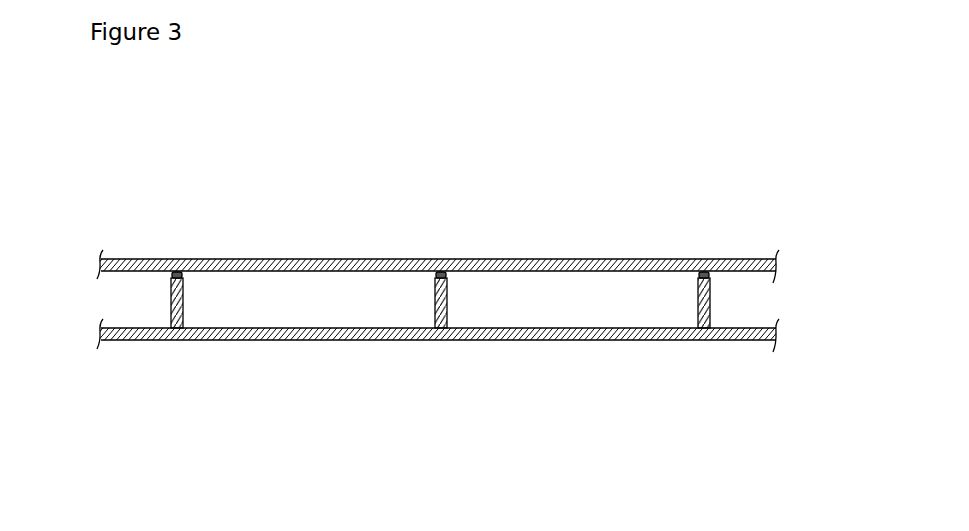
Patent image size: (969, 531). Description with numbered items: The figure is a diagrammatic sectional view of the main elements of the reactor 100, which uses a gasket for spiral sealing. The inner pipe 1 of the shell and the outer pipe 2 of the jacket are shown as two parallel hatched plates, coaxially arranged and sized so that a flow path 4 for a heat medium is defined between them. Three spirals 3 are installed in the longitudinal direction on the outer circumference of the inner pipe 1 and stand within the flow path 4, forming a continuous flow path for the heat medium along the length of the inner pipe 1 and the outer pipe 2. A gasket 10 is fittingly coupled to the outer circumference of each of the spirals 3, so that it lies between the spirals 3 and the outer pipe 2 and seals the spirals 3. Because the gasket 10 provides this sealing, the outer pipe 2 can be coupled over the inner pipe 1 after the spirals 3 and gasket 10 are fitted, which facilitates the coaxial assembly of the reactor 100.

The reactor 100 is at (90, 90).
The inner pipe 1 is at (310, 341).
The outer pipe 2 is at (326, 259).
The spirals 3 is at (171, 297).
The flow path 4 is at (547, 309).
The gasket 10 is at (174, 258).